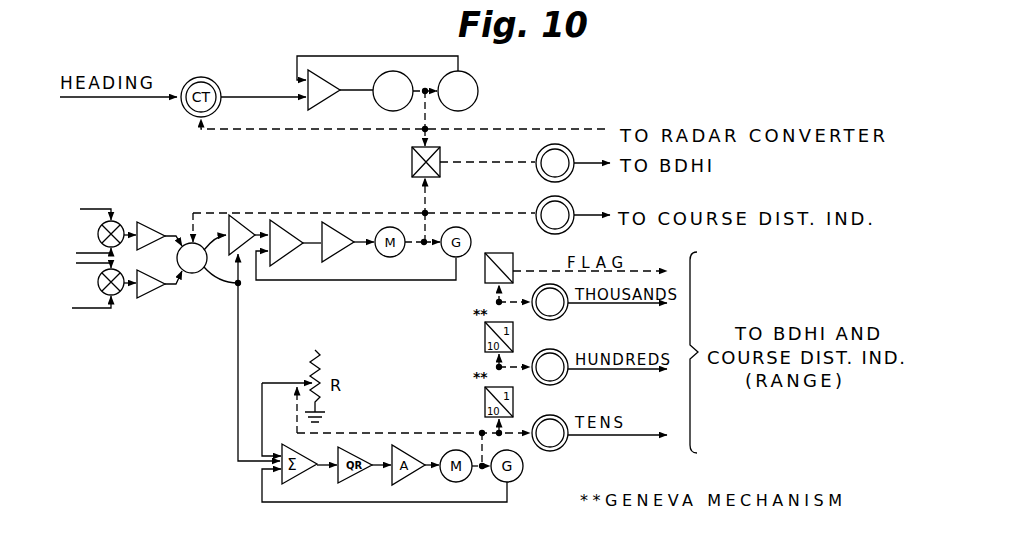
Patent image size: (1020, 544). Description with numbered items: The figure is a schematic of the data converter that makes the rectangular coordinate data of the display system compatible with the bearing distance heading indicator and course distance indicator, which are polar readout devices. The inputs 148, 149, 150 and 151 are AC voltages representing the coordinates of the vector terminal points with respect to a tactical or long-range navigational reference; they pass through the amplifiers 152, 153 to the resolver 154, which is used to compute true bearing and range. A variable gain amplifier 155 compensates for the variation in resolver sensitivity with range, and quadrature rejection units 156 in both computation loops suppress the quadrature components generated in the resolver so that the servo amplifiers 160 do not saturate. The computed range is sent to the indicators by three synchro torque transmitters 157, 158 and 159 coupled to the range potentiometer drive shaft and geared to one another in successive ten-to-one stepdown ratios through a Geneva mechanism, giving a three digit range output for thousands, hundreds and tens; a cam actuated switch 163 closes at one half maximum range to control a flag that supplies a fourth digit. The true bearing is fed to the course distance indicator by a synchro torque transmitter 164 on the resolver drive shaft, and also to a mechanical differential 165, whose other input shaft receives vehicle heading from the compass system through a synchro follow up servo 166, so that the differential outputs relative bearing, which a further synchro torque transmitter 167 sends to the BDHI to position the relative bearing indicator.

The input 148 is at (80, 208).
The input 149 is at (85, 252).
The input 150 is at (80, 264).
The input 151 is at (80, 309).
The amplifier 152 is at (150, 222).
The amplifier 153 is at (148, 299).
The resolver 154 is at (192, 274).
The variable gain amplifier 155 is at (244, 213).
The quadrature rejection unit 156 is at (292, 220).
The synchro torque transmitter 157 is at (567, 313).
The synchro torque transmitter 158 is at (567, 379).
The synchro torque transmitter 159 is at (567, 446).
The servo amplifier 160 is at (338, 222).
The cam actuated switch 163 is at (514, 264).
The synchro torque transmitter 164 is at (540, 204).
The mechanical differential 165 is at (410, 161).
The synchro follow up servo 166 is at (423, 113).
The synchro torque transmitter 167 is at (558, 144).